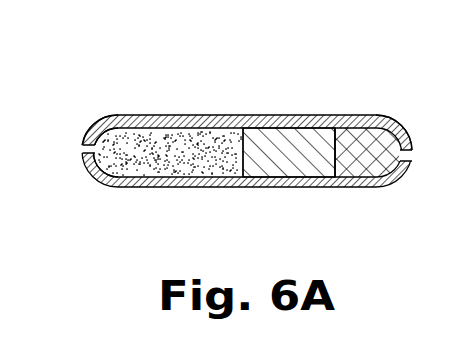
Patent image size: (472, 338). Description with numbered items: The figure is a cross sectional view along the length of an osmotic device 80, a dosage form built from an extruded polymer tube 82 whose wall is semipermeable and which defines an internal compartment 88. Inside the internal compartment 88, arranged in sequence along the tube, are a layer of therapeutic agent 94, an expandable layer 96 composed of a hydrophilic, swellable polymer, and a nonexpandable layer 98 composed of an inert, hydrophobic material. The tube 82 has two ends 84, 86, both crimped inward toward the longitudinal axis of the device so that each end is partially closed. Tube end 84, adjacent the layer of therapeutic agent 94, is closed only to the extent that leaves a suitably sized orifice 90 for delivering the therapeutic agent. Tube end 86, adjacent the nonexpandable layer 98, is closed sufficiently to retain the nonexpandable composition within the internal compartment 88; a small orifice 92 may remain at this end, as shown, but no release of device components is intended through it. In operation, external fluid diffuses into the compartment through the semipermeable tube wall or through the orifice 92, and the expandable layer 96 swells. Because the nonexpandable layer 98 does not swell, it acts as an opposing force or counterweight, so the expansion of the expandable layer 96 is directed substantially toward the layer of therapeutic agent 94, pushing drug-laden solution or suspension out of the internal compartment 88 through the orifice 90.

The osmotic device 80 is at (326, 86).
The extruded polymer tube 82 is at (217, 108).
The tube end 84 is at (88, 129).
The tube end 86 is at (405, 125).
The internal compartment 88 is at (152, 145).
The orifice 90 is at (82, 153).
The orifice 92 is at (407, 153).
The layer of therapeutic agent 94 is at (193, 163).
The expandable layer 96 is at (278, 162).
The nonexpandable layer 98 is at (362, 165).